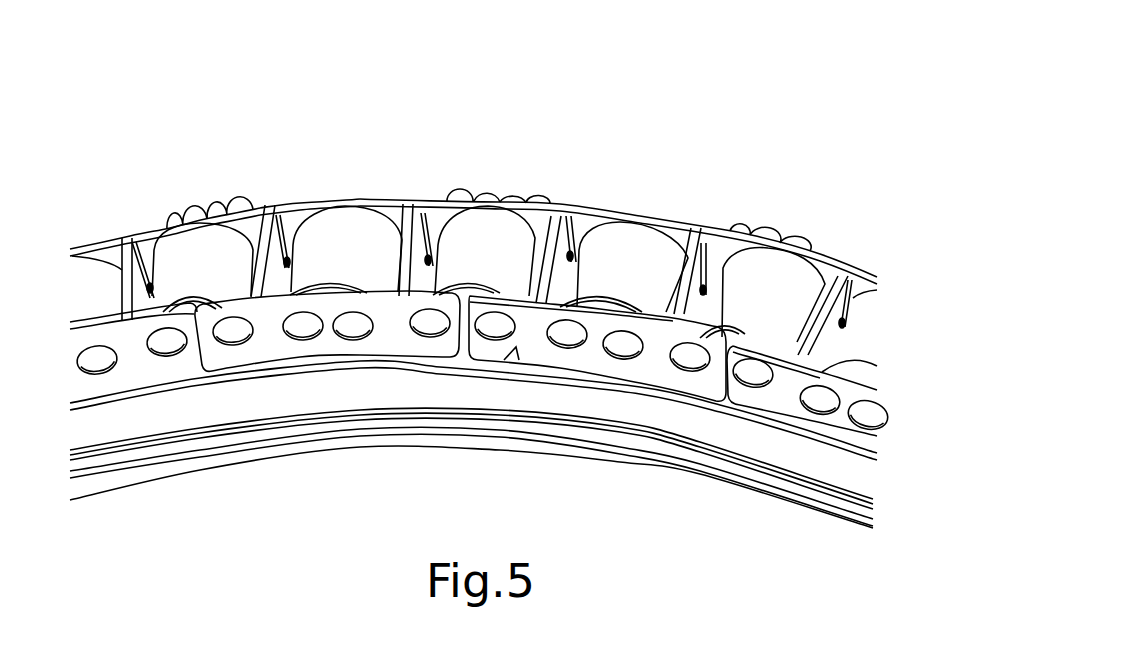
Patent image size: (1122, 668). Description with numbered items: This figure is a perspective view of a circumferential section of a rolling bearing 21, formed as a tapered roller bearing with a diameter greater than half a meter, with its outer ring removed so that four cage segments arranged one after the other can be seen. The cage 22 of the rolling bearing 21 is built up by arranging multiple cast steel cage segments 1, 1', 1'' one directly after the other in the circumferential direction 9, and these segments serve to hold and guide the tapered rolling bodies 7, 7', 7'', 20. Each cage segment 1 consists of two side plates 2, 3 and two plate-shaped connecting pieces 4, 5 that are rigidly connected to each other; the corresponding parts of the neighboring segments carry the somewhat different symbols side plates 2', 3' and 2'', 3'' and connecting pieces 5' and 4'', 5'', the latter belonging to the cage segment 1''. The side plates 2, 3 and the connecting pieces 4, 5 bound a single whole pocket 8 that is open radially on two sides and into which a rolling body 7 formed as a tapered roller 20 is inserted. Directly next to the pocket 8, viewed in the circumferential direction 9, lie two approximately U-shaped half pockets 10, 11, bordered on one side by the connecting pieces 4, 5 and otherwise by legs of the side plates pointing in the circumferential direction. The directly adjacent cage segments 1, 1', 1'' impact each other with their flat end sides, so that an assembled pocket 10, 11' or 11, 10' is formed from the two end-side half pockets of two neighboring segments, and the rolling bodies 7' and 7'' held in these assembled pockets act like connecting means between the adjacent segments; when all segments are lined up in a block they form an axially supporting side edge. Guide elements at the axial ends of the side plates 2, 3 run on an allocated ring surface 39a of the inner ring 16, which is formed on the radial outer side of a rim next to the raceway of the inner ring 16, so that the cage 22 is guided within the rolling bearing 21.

The cage segment 1 is at (327, 181).
The cage segment 1' is at (135, 201).
The cage segment 1'' is at (639, 179).
The side plate 2 is at (450, 178).
The side plate 2' is at (165, 213).
The side plate 2'' is at (742, 207).
The side plate 3 is at (331, 413).
The side plate 3' is at (133, 410).
The side plate 3'' is at (593, 414).
The connecting piece 4 is at (271, 215).
The strut 4'' is at (565, 214).
The connecting piece 5 is at (421, 210).
The connecting piece 5' is at (138, 234).
The strut 5'' is at (703, 232).
The rolling body 7 is at (346, 249).
The rolling body 7' is at (202, 259).
The rolling body 7'' is at (478, 251).
The pocket 8 is at (390, 198).
The circumferential direction 9 is at (791, 201).
The half pocket 10 is at (233, 175).
The half pocket 10' is at (527, 164).
The half pocket 11 is at (473, 163).
The half pocket 11' is at (489, 190).
The inner ring 16 is at (320, 389).
The tapered roller 20 is at (632, 270).
The rolling bearing 21 is at (812, 135).
The cage 22 is at (281, 352).
The ring surface 39a is at (515, 353).